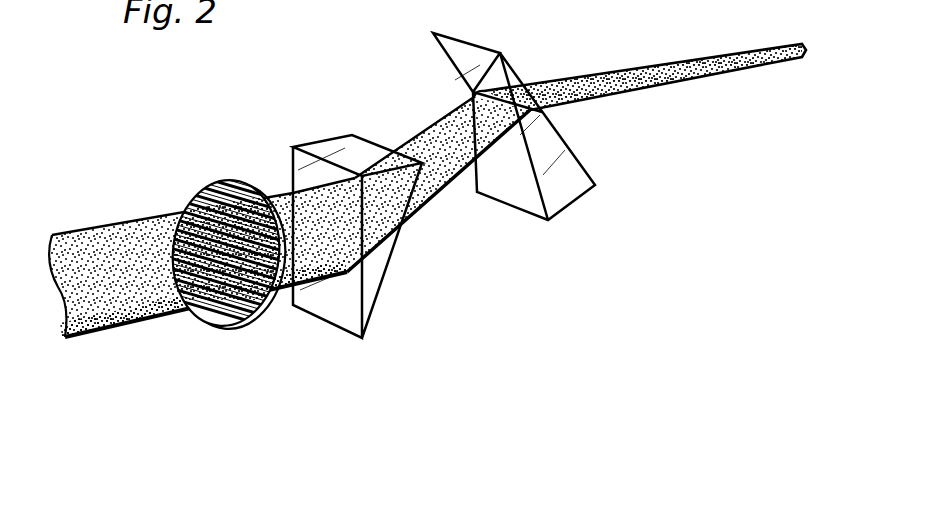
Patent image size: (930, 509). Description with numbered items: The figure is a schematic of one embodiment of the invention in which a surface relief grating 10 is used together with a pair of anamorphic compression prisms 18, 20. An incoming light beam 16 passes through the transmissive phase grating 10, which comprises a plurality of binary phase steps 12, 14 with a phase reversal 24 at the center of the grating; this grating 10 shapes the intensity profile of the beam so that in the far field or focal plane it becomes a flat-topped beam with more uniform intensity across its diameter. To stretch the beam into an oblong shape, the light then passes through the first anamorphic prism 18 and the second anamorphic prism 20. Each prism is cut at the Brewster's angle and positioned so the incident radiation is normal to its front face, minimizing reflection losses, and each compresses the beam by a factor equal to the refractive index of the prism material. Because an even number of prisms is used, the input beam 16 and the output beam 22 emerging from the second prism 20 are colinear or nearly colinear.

The surface relief grating 10 is at (225, 246).
The binary phase step 12 is at (180, 204).
The binary phase step 14 is at (183, 201).
The input light beam 16 is at (112, 225).
The anamorphic prism 18 is at (342, 134).
The anamorphic prism 20 is at (488, 53).
The output light beam 22 is at (663, 63).
The phase reversal 24 is at (155, 213).